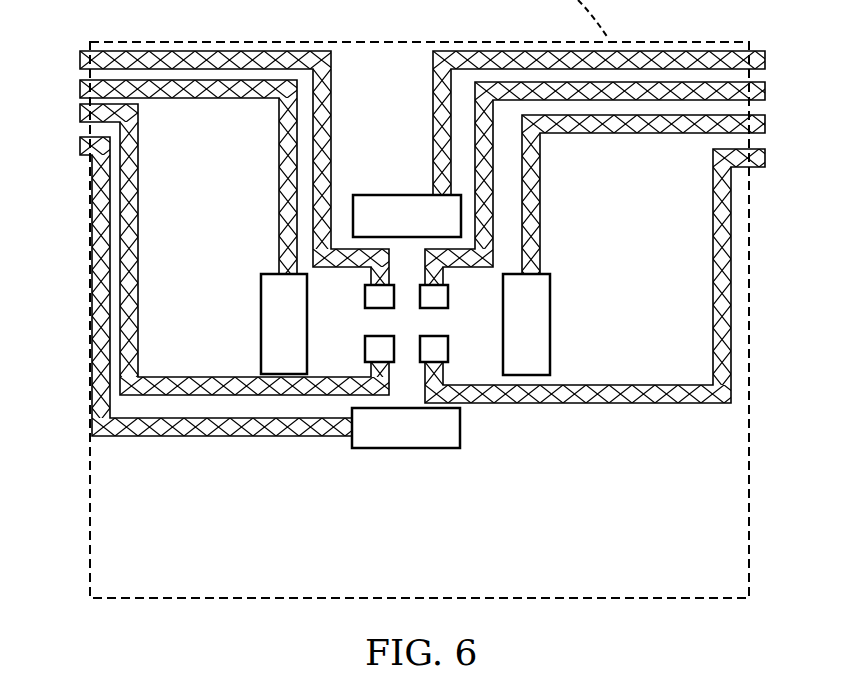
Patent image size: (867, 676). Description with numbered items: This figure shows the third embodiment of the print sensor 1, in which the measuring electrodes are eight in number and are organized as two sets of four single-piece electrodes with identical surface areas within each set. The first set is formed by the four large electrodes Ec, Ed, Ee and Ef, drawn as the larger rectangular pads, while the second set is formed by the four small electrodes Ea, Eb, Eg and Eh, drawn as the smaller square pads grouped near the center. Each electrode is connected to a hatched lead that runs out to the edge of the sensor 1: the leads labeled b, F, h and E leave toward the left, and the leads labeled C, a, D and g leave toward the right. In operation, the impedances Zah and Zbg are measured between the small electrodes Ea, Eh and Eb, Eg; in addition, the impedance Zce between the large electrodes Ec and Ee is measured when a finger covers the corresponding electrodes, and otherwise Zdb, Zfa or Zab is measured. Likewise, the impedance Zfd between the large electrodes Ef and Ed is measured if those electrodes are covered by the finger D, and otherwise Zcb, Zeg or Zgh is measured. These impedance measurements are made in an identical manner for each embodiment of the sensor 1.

The sensor 1 is at (636, 674).
The wiring line b is at (215, 164).
The wiring line F is at (169, 174).
The wiring line h is at (215, 249).
The wiring line E is at (196, 285).
The wiring line C is at (616, 119).
The wiring line a is at (611, 183).
The finger D is at (661, 194).
The wiring line g is at (612, 276).
The large electrode Ec is at (407, 216).
The large electrode Ef is at (284, 324).
The large electrode Ed is at (526, 324).
The large electrode Ee is at (406, 428).
The small electrode Eb is at (380, 289).
The small electrode Ea is at (434, 293).
The small electrode Eh is at (380, 343).
The small electrode Eg is at (437, 349).